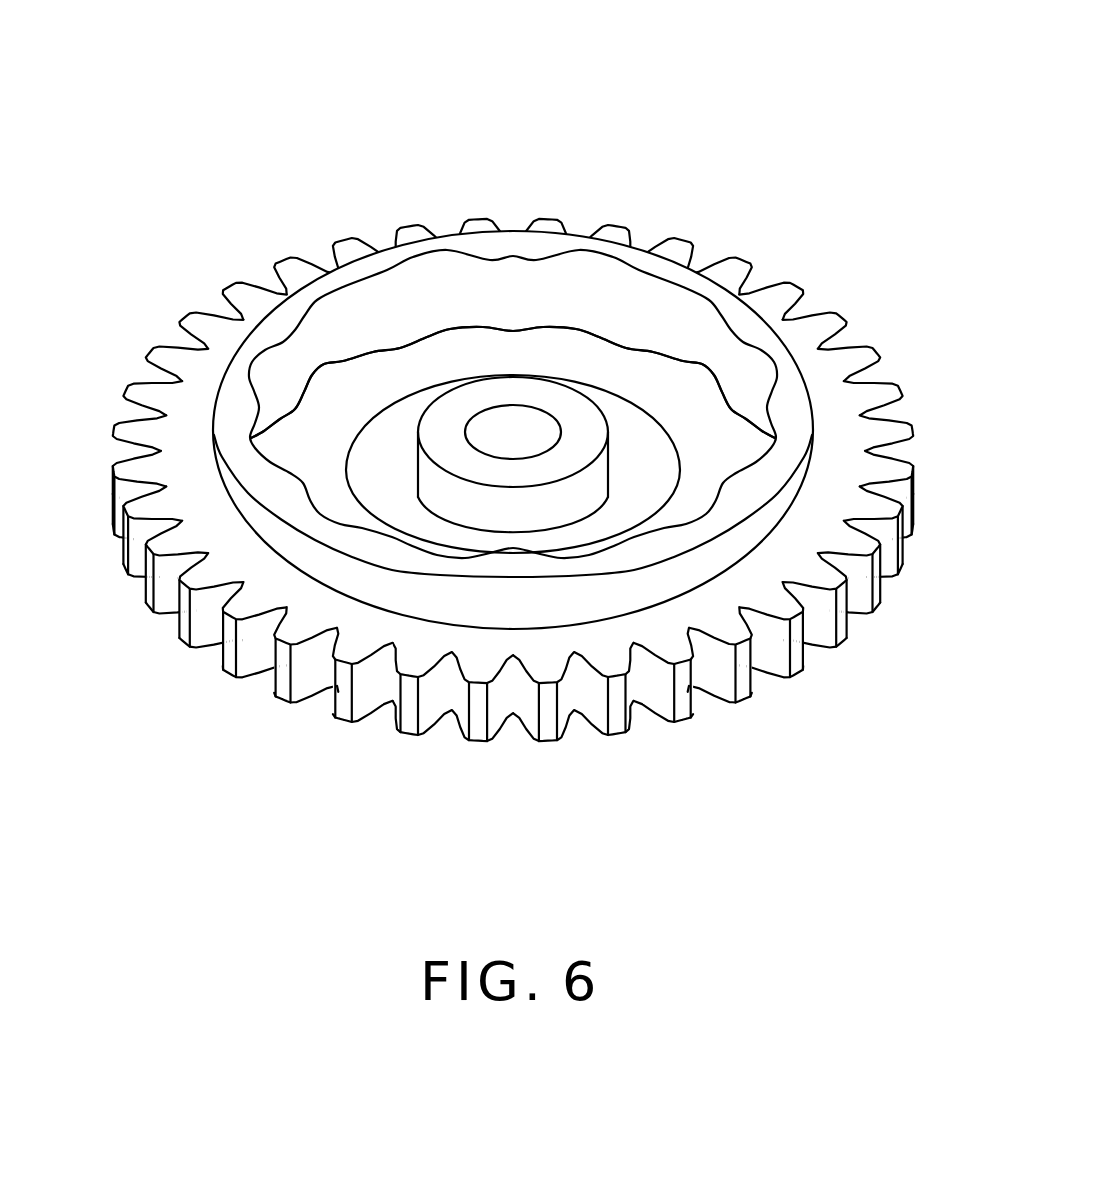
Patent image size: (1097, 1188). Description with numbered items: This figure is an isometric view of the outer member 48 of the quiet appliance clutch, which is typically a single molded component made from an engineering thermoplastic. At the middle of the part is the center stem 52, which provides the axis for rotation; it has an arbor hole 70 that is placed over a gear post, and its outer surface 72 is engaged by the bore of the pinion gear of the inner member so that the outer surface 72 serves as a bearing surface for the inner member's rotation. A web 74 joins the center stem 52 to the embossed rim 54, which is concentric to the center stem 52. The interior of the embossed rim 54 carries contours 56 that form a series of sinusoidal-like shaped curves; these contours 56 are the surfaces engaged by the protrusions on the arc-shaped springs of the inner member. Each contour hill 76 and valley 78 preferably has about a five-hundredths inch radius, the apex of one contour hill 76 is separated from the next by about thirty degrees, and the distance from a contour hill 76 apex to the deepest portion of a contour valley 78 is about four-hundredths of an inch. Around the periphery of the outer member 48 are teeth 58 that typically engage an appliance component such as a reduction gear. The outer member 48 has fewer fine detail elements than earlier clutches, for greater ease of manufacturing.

The outer member 48 is at (510, 148).
The center stem 52 is at (568, 457).
The embossed rim 54 is at (237, 396).
The contours 56 is at (513, 252).
The teeth 58 is at (343, 697).
The arbor hole 70 is at (512, 432).
The outer surface 72 is at (607, 422).
The web 74 is at (352, 393).
The contour hill 76 is at (638, 279).
The contour valley 78 is at (700, 288).